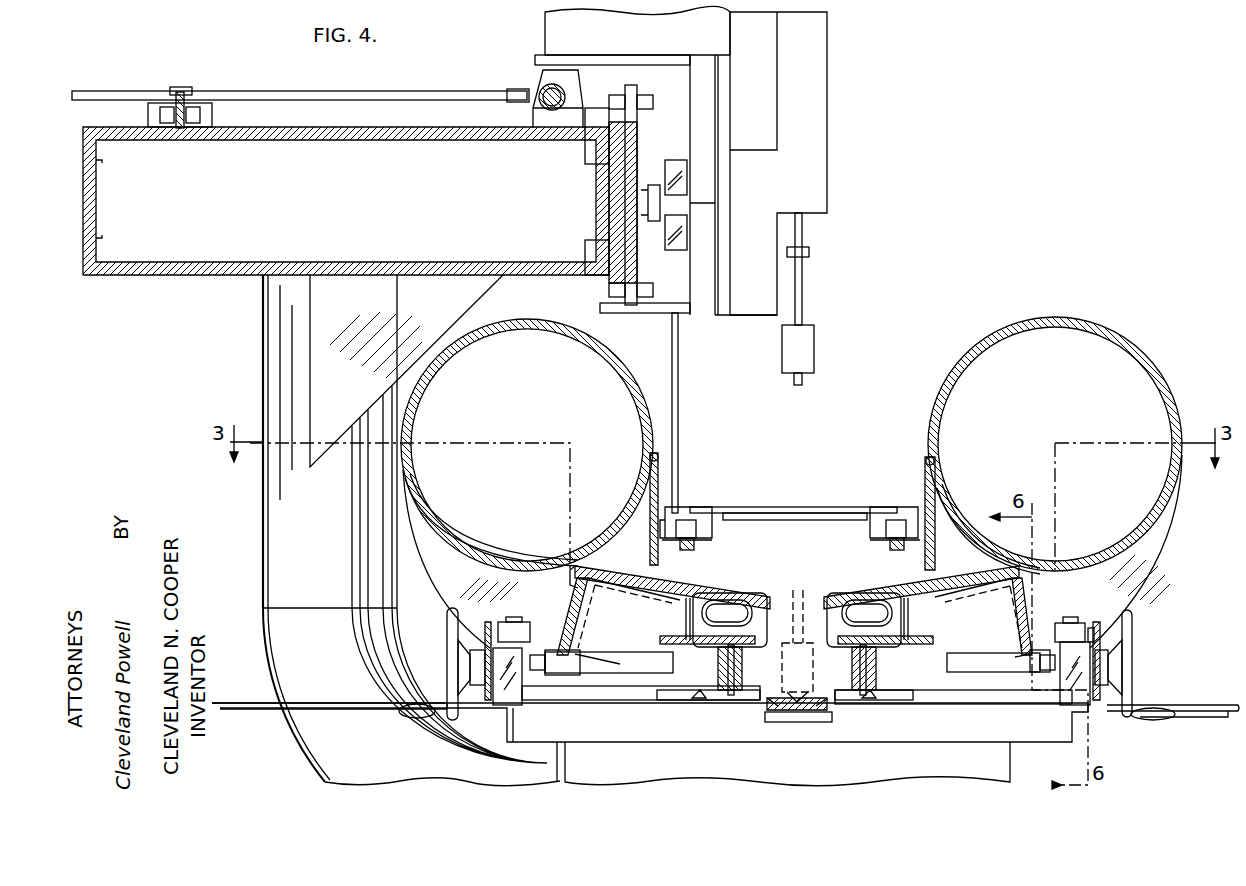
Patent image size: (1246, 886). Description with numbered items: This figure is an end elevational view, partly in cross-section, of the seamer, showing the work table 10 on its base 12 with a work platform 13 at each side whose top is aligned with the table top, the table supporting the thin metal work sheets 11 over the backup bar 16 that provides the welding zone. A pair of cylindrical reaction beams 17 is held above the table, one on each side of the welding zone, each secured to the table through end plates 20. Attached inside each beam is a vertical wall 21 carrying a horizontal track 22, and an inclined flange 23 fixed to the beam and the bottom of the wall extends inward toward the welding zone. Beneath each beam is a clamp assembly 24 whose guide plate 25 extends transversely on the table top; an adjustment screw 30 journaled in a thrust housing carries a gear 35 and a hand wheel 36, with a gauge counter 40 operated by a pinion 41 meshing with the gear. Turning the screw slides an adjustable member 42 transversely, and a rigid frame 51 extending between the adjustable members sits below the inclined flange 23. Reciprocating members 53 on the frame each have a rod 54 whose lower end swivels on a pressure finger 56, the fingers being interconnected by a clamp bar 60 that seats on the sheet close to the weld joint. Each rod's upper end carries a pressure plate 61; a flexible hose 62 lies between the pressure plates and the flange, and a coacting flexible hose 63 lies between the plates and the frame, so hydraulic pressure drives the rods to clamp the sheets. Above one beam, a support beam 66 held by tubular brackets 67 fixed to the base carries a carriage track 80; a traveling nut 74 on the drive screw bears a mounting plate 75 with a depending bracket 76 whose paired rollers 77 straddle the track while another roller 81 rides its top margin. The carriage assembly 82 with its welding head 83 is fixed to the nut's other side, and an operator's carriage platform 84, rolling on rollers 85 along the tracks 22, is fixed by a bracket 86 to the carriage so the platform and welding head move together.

The work table 10 is at (606, 745).
The work sheets 11 is at (335, 702).
The base 12 is at (990, 760).
The work platform 13 is at (264, 712).
The backup bar 16 is at (790, 722).
The reaction beams 17 is at (513, 325).
The end plates 20 is at (446, 578).
The vertical wall 21 is at (657, 487).
The horizontal track 22 is at (690, 552).
The inclined flange 23 is at (628, 570).
The clamp assembly 24 is at (572, 588).
The guide plate 25 is at (580, 700).
The adjustment screw 30 is at (540, 655).
The gear 35 is at (1100, 705).
The hand wheel 36 is at (447, 640).
The gauge counter 40 is at (514, 622).
The pinion 41 is at (1094, 632).
The adjustable member 42 is at (590, 655).
The rigid frame 51 is at (572, 603).
The reciprocating members 53 is at (675, 702).
The rod 54 is at (742, 663).
The pressure finger 56 is at (702, 700).
The clamp bar 60 is at (770, 706).
The pressure plate 61 is at (688, 614).
The flexible hose 62 is at (765, 600).
The coacting flexible hose 63 is at (688, 634).
The support beam 66 is at (345, 135).
The tubular bracket 67 is at (270, 495).
The traveling nut 74 is at (538, 78).
The mounting plate 75 is at (394, 92).
The bracket 76 is at (148, 113).
The rollers 77 is at (166, 126).
The carriage track 80 is at (180, 130).
The roller 81 is at (181, 87).
The carriage assembly 82 is at (645, 36).
The welding head 83 is at (818, 113).
The operator's carriage platform 84 is at (836, 507).
The rollers 85 is at (898, 520).
The bracket 86 is at (679, 395).